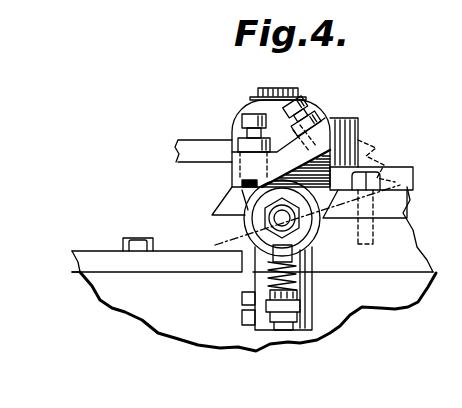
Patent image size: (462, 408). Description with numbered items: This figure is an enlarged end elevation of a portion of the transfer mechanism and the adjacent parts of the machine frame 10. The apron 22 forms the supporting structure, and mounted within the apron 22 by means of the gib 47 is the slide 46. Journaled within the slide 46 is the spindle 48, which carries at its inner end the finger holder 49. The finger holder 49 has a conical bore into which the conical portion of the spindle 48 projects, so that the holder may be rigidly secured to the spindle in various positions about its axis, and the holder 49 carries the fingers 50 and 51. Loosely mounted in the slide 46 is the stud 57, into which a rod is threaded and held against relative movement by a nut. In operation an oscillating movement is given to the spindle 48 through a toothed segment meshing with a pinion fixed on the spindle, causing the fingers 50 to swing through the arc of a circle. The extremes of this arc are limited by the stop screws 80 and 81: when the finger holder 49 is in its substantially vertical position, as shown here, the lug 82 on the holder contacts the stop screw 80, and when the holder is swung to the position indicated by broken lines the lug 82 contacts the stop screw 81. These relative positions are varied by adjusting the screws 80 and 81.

The base frame 10 is at (420, 297).
The apron 22 is at (252, 229).
The slide 46 is at (223, 210).
The gib 47 is at (378, 190).
The spindle 48 is at (277, 219).
The finger holder 49 is at (302, 286).
The finger 50 is at (258, 330).
The finger 51 is at (302, 300).
The stud 57 is at (278, 91).
The stop screw 80 is at (240, 119).
The stop screw 81 is at (318, 100).
The lug 82 is at (232, 185).